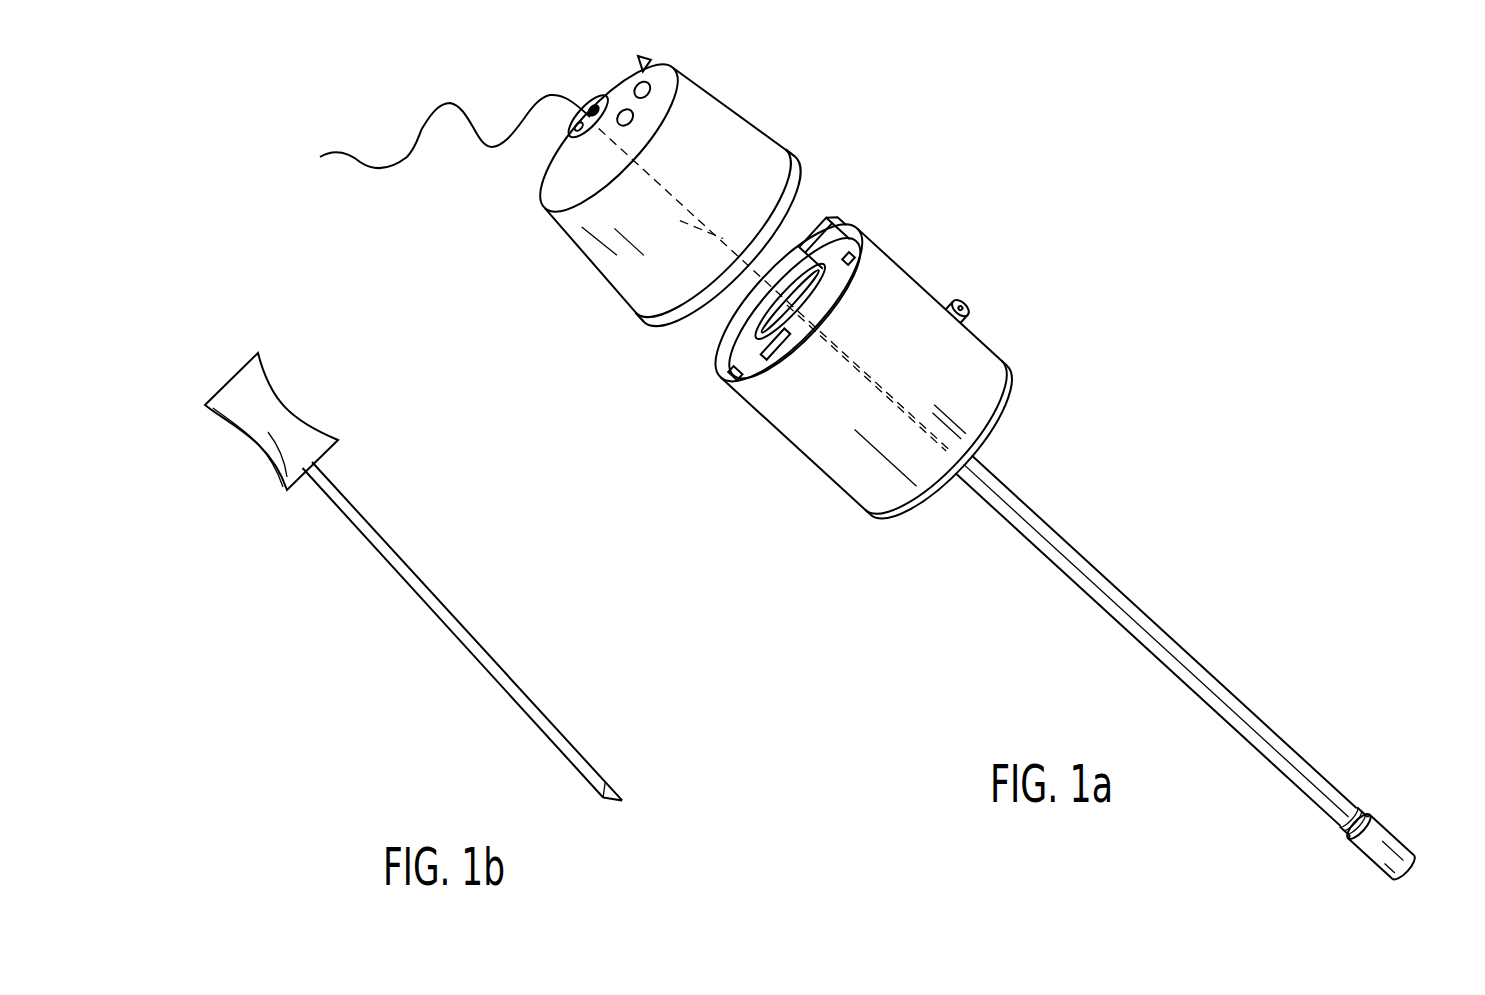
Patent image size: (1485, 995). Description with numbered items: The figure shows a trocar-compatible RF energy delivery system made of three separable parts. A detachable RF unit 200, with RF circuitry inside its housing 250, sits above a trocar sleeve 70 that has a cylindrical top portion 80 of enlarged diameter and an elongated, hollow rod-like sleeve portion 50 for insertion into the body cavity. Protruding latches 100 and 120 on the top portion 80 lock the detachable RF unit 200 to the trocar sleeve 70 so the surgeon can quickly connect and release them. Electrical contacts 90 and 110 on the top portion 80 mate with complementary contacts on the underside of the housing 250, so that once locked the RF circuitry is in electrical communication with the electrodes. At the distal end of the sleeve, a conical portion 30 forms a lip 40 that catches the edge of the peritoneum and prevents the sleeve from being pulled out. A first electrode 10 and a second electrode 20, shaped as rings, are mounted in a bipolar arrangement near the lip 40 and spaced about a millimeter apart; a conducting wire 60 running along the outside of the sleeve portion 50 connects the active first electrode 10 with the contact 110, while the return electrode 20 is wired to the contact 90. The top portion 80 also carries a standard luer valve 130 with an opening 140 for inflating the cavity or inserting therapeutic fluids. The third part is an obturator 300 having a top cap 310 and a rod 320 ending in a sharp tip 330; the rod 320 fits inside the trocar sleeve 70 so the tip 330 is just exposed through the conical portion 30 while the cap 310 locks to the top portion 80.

In FIG. 1A, the first electrode 10 is at (1360, 810).
In FIG. 1A, the second electrode 20 is at (1356, 806).
In FIG. 1A, the conical portion 30 is at (1390, 848).
In FIG. 1A, the lip 40 is at (1347, 842).
In FIG. 1A, the rod-like sleeve portion 50 is at (1203, 660).
In FIG. 1A, the conducting wire 60 is at (1124, 605).
In FIG. 1A, the trocar sleeve 70 is at (822, 513).
In FIG. 1A, the cylindrical top portion 80 is at (808, 447).
In FIG. 1A, the electrical contact 90 is at (850, 250).
In FIG. 1A, the latch 100 is at (825, 232).
In FIG. 1A, the electrical contact 110 is at (777, 345).
In FIG. 1A, the latch 120 is at (741, 378).
In FIG. 1A, the luer valve 130 is at (949, 310).
In FIG. 1A, the opening 140 is at (1017, 328).
In FIG. 1A, the detachable RF unit 200 is at (720, 105).
In FIG. 1A, the housing 250 is at (727, 133).
In FIG. 1B, the obturator 300 is at (407, 640).
In FIG. 1B, the top cap 310 is at (282, 478).
In FIG. 1B, the rod 320 is at (430, 605).
In FIG. 1B, the sharp tip 330 is at (612, 797).